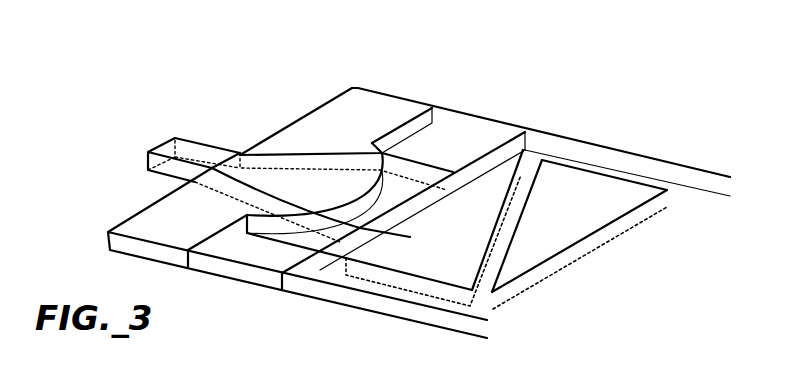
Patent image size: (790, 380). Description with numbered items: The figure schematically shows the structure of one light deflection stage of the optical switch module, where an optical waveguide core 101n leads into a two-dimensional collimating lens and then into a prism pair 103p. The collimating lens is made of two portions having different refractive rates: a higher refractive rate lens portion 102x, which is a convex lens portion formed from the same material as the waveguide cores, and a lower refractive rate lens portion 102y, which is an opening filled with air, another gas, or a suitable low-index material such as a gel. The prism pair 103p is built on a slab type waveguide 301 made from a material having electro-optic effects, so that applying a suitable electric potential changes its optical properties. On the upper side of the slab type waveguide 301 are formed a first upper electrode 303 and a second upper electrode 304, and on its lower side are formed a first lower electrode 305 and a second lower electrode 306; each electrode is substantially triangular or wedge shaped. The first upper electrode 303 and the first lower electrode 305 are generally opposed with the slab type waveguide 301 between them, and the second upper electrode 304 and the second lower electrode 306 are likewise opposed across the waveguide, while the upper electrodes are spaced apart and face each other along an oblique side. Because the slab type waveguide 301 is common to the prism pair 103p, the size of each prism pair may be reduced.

The optical waveguide core 101n is at (200, 140).
The higher refractive rate lens portion 102x is at (348, 110).
The lower refractive rate lens portion 102y is at (475, 125).
The prism pair 103p is at (685, 152).
The slab type waveguide 301 is at (683, 178).
The first upper electrode 303 is at (383, 253).
The second upper electrode 304 is at (590, 213).
The first lower electrode 305 is at (423, 297).
The second lower electrode 306 is at (523, 288).